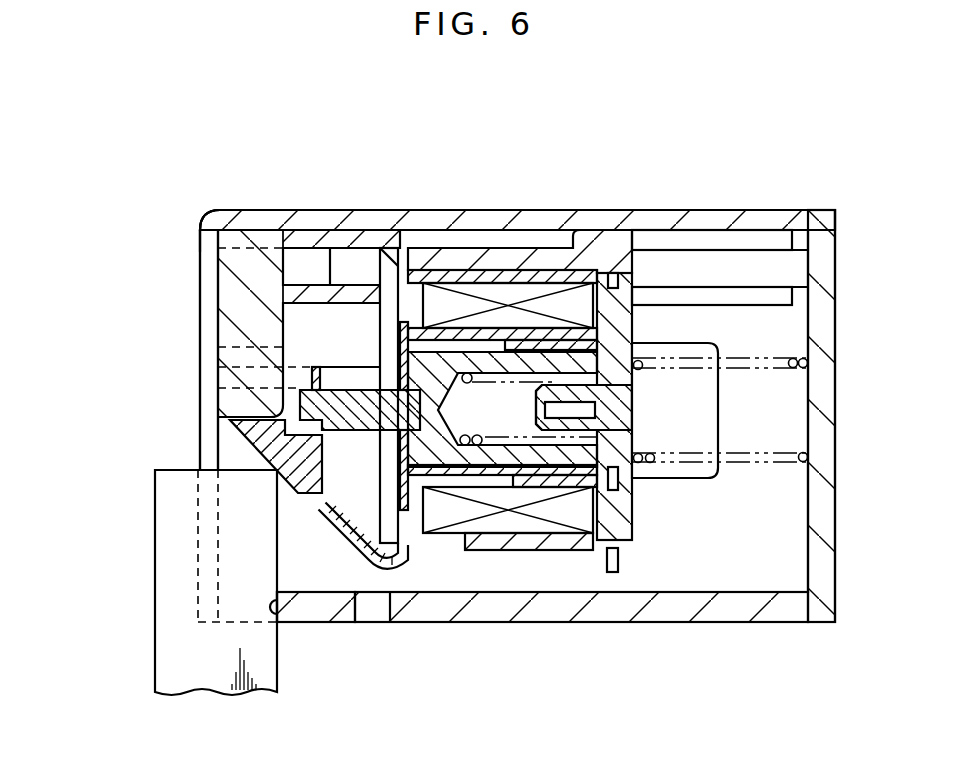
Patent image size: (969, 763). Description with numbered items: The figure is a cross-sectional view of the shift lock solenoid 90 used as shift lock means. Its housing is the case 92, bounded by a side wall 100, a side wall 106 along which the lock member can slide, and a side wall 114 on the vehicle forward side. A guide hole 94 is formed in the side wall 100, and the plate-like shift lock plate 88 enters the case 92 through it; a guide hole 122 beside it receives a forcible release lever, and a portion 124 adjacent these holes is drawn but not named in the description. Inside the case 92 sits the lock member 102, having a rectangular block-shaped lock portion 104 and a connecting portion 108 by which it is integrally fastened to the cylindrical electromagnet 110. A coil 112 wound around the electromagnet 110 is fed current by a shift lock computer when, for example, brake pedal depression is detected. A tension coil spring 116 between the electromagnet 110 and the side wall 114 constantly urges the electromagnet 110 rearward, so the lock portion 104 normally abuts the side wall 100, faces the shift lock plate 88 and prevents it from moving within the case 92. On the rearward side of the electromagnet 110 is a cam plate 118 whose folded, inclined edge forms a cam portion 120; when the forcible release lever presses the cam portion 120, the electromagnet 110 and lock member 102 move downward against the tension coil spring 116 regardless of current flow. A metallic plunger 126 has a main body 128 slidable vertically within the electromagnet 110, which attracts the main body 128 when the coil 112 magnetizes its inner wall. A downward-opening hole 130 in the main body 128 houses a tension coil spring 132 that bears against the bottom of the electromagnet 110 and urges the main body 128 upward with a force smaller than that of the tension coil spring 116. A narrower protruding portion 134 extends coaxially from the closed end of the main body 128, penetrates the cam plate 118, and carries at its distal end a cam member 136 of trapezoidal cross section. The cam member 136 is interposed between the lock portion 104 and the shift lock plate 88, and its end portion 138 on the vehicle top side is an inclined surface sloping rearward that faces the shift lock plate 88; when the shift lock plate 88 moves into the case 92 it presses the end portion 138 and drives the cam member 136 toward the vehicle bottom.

The shift lock plate 88 is at (155, 552).
The solenoid actuator assembly 90 is at (125, 331).
The case 92 is at (203, 216).
The guide hole 94 is at (287, 624).
The side wall 100 is at (200, 272).
The lock member 102 is at (305, 268).
The lock portion 104 is at (202, 327).
The side wall 106 is at (767, 218).
The connecting portion 108 is at (433, 247).
The electromagnet 110 is at (525, 270).
The coil 112 is at (557, 527).
The side wall 114 is at (836, 420).
The tension coil spring 116 is at (800, 345).
The cam plate 118 is at (425, 472).
The cam portion 120 is at (363, 553).
The guide hole 122 is at (385, 610).
The bottom wall section 124 is at (348, 610).
The plunger 126 is at (473, 334).
The main body 128 is at (468, 457).
The hole 130 is at (502, 447).
The tension coil spring 132 is at (582, 383).
The protruding portion 134 is at (348, 433).
The cam member 136 is at (257, 457).
The end portion 138 is at (228, 423).